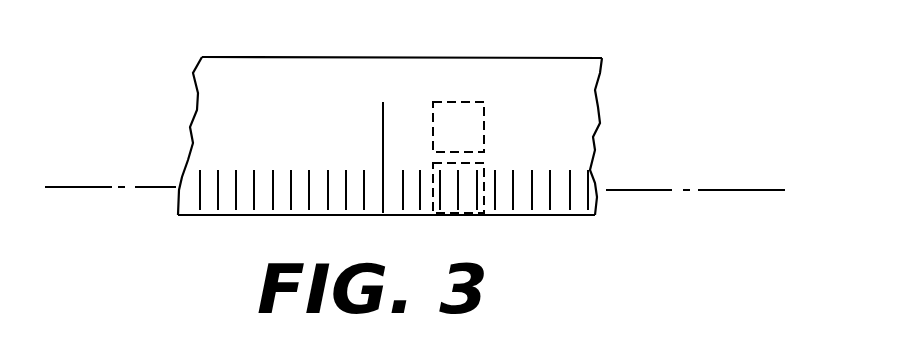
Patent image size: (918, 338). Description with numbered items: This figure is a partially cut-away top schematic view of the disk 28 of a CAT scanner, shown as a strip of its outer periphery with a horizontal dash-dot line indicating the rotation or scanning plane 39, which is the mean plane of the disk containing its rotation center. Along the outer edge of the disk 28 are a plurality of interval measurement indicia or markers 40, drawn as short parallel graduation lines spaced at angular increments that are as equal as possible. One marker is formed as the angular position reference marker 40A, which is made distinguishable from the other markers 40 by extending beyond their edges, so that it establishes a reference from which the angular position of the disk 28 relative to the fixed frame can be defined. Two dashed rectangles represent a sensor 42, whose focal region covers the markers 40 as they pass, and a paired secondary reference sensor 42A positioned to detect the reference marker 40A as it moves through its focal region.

The disk 28 is at (448, 57).
The rotation or scanning plane 39 is at (659, 189).
The interval measurement indicia or markers 40 is at (308, 196).
The angular position reference marker 40A is at (383, 113).
The sensor 42 is at (484, 163).
The secondary reference sensor 42A is at (484, 118).